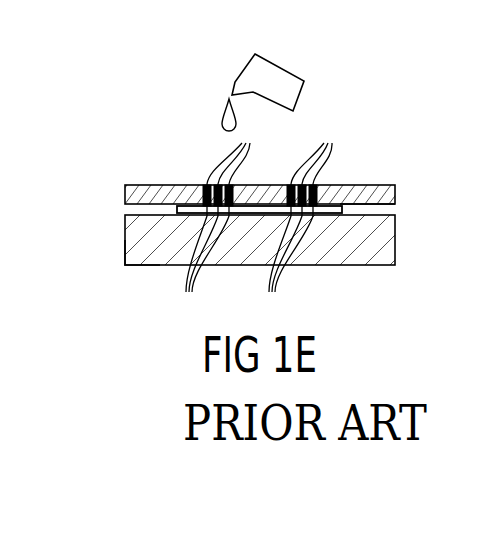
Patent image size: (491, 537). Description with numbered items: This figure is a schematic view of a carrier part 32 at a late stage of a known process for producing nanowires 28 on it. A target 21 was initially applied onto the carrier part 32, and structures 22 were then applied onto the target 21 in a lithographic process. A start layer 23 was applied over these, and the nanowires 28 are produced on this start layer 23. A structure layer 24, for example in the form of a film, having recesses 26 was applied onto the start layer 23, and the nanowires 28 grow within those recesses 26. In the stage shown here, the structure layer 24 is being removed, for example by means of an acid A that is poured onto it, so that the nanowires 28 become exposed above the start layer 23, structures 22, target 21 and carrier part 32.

The acid A is at (283, 90).
The target 21 is at (353, 215).
The structures 22 is at (194, 188).
The start layer 23 is at (360, 204).
The structure layer 24 is at (140, 197).
The recesses 26 is at (252, 235).
The nanowires 28 is at (274, 157).
The carrier part 32 is at (138, 232).